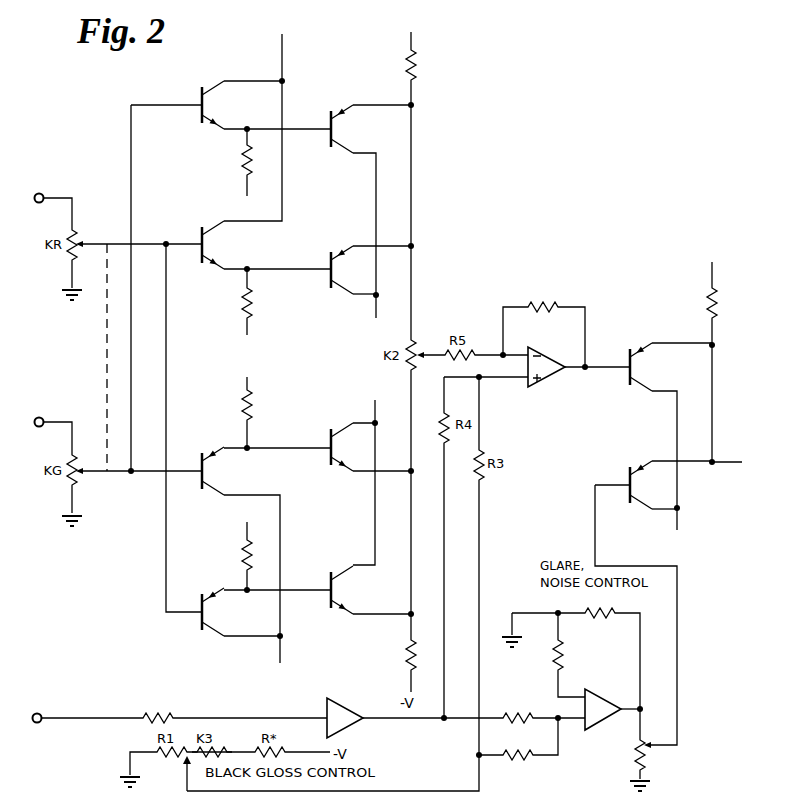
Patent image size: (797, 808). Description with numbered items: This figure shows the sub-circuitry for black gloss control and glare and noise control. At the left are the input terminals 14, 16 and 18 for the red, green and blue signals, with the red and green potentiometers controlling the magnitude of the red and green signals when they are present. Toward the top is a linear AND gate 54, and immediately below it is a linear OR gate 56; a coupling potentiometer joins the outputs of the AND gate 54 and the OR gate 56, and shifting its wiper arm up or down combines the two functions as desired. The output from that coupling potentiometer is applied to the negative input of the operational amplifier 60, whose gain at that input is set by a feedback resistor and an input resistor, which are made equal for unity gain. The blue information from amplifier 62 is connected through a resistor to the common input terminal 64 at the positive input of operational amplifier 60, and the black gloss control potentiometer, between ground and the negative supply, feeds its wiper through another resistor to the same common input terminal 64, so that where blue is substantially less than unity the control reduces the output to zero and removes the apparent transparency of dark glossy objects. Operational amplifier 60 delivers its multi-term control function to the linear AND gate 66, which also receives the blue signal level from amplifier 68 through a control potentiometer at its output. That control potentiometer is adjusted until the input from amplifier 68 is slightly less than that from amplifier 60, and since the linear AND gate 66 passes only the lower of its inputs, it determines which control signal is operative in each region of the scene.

The input terminal 14 is at (42, 193).
The input terminal 16 is at (42, 418).
The input terminal 18 is at (40, 714).
The linear AND gate 54 is at (340, 198).
The linear OR gate 56 is at (338, 515).
The operational amplifier 60 is at (544, 384).
The amplifier 62 is at (345, 707).
The common input terminal 64 is at (511, 381).
The linear AND gate 66 is at (626, 407).
The amplifier 68 is at (603, 690).